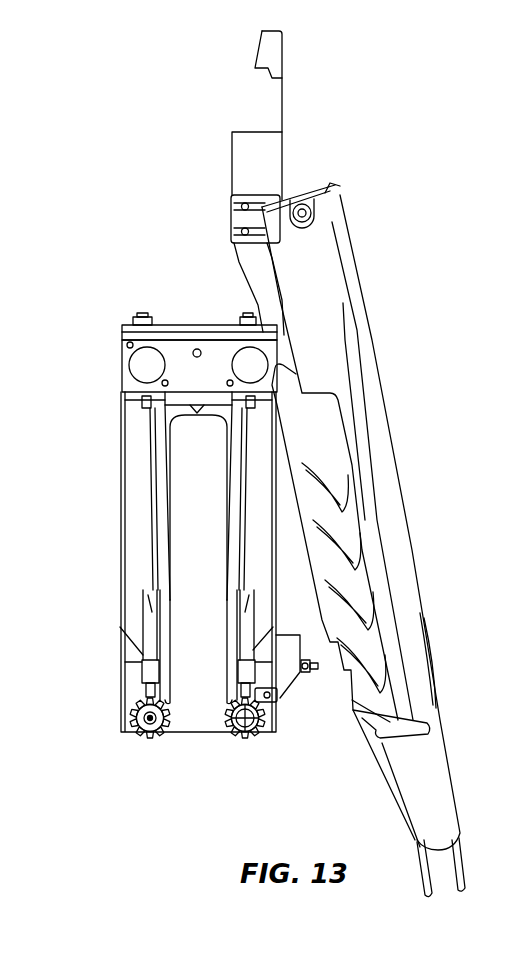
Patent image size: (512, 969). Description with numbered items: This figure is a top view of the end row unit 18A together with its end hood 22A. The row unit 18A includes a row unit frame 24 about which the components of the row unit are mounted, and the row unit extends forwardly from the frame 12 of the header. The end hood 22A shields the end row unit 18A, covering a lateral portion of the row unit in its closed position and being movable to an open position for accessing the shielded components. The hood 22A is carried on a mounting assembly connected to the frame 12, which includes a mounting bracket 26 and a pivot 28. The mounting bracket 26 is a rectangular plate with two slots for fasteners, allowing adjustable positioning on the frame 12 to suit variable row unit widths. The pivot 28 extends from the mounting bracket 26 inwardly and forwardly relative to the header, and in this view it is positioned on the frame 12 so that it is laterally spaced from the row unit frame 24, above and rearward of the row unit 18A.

The frame 12 is at (250, 131).
The end row unit 18A is at (90, 634).
The end hood 22A is at (402, 490).
The row unit frame 24 is at (188, 325).
The mounting bracket 26 is at (232, 216).
The pivot 28 is at (302, 205).